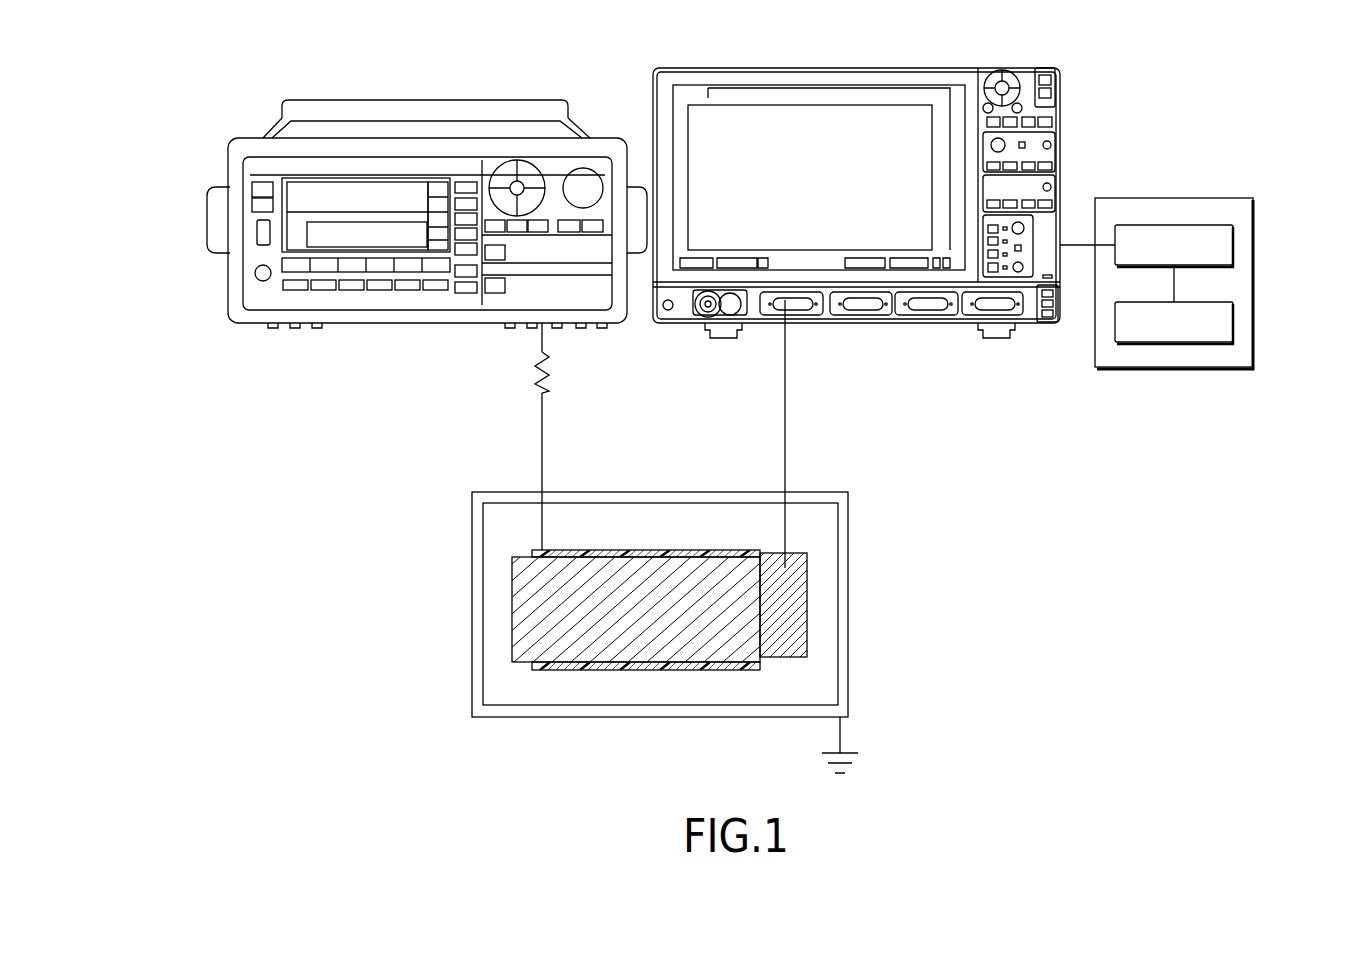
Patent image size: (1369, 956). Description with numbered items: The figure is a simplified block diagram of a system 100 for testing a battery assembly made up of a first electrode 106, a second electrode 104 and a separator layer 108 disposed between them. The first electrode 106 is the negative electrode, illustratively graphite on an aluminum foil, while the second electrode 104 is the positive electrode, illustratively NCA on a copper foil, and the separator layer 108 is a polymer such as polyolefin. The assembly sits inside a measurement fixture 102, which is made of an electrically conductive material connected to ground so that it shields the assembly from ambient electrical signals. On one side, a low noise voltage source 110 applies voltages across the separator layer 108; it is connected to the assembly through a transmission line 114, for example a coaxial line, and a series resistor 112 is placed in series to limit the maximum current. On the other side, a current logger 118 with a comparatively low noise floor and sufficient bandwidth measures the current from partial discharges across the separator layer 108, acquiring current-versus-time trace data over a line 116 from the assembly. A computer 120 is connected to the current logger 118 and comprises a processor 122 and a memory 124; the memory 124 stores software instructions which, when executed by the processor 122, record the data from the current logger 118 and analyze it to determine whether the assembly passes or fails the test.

The system 100 is at (578, 41).
The measurement fixture 102 is at (472, 640).
The second electrode 104 is at (512, 598).
The first electrode 106 is at (803, 605).
The separator layer 108 is at (592, 668).
The voltage source 110 is at (190, 166).
The series resistor 112 is at (535, 372).
The transmission line 114 is at (542, 450).
The current line 116 is at (785, 407).
The current logger 118 is at (1093, 158).
The computer 120 is at (1243, 198).
The processor 122 is at (1233, 243).
The memory 124 is at (1233, 325).